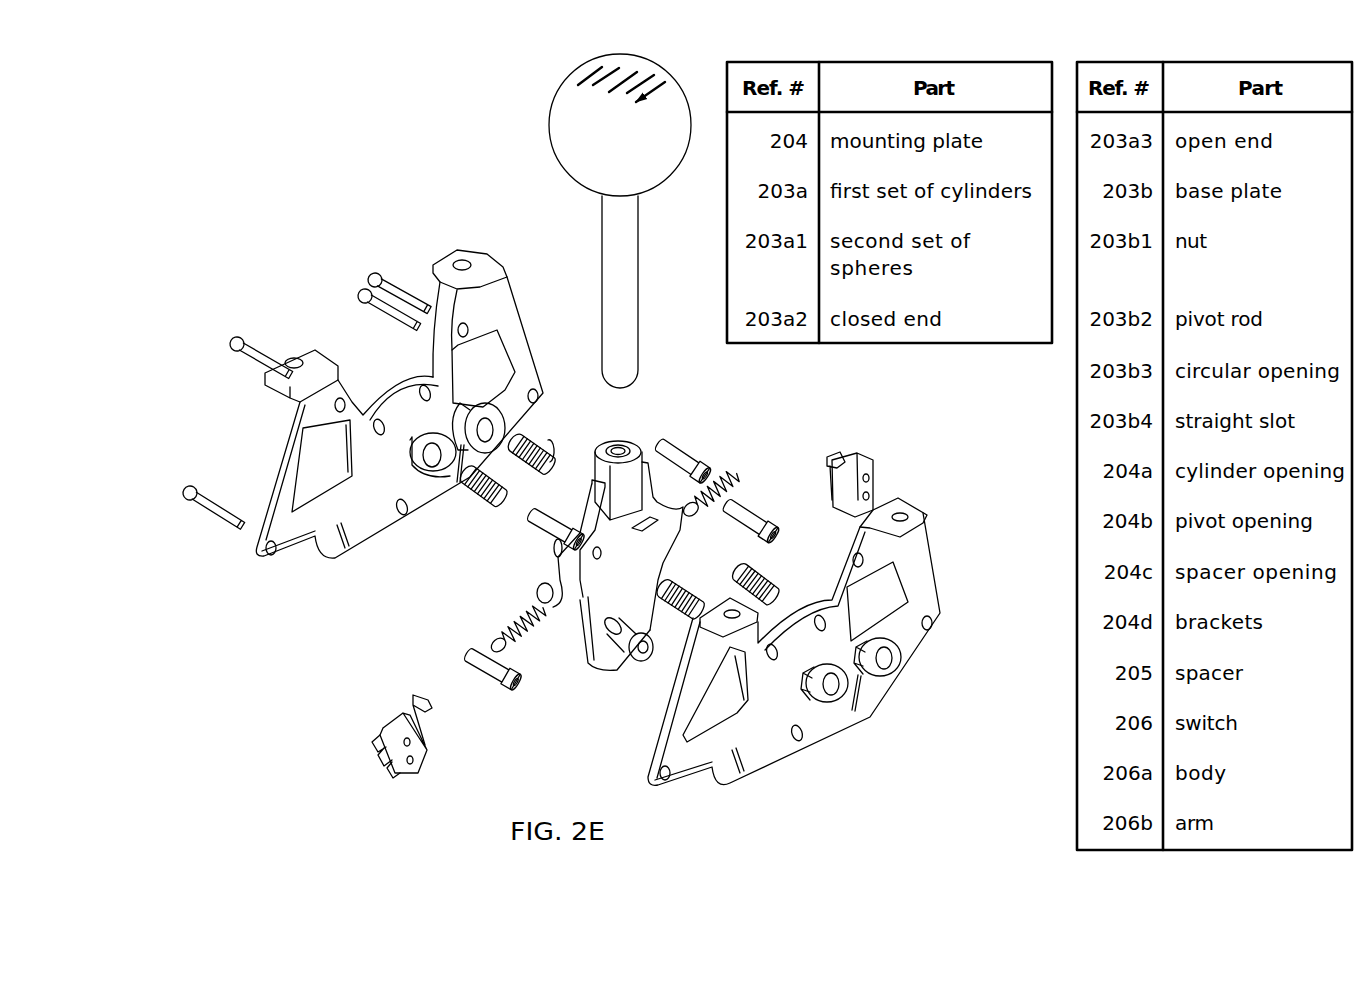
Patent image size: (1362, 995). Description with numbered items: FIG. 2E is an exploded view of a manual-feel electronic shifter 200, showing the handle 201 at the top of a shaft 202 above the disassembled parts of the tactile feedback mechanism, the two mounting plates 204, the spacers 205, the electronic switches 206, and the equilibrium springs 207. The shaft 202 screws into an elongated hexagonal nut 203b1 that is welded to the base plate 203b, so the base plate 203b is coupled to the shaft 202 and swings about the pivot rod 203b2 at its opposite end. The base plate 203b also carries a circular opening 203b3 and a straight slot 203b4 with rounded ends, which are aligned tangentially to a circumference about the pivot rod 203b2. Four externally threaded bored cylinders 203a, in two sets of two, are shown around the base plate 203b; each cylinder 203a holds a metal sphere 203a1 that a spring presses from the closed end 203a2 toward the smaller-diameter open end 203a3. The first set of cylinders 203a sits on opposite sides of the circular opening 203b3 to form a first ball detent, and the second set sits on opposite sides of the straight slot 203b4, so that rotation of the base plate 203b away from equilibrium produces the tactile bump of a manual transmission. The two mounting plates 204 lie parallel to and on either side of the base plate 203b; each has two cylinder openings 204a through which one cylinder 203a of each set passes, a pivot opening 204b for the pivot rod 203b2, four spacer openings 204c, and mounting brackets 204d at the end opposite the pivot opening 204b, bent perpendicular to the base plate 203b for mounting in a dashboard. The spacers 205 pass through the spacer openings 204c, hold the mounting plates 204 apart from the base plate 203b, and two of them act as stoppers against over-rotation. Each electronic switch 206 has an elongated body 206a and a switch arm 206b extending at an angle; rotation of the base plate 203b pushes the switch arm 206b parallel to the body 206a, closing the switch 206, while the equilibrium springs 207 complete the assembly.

The shifter 200 is at (150, 102).
The handle 201 is at (550, 142).
The shaft 202 is at (638, 238).
The externally threaded bored cylinders 203a is at (540, 450).
The metal sphere 203a1 is at (500, 497).
The closed end 203a2 is at (535, 434).
The open end 203a3 is at (555, 549).
The base plate 203b is at (578, 645).
The elongated hexagonal nut 203b1 is at (648, 445).
The pivot rod 203b2 is at (640, 660).
The circular opening 203b3 is at (598, 560).
The straight slot 203b4 is at (652, 540).
The mounting plate 204 is at (200, 419).
The cylinder opening 204a is at (424, 386).
The pivot opening 204b is at (405, 516).
The spacer opening 204c is at (468, 330).
The mounting bracket 204d is at (466, 250).
The spacer 205 is at (373, 258).
The electronic switch 206 is at (569, 589).
The elongated body 206a is at (415, 773).
The switch arm 206b is at (417, 700).
The equilibrium spring 207 is at (720, 475).